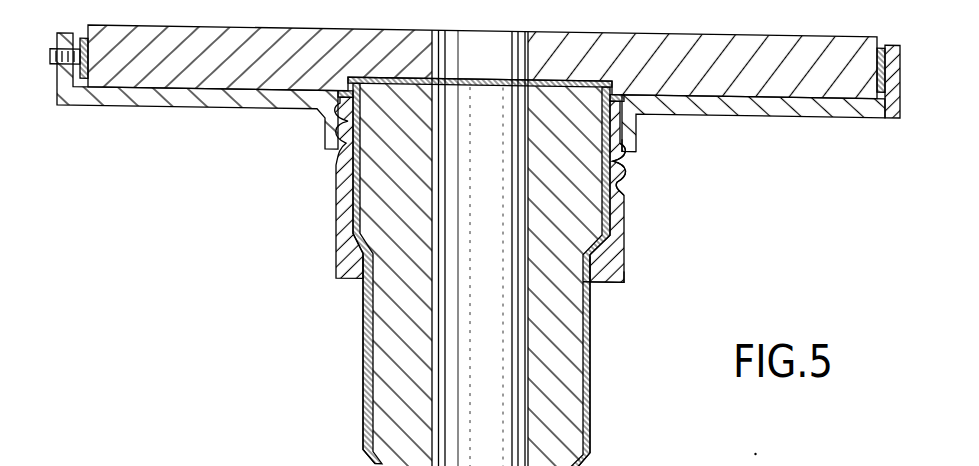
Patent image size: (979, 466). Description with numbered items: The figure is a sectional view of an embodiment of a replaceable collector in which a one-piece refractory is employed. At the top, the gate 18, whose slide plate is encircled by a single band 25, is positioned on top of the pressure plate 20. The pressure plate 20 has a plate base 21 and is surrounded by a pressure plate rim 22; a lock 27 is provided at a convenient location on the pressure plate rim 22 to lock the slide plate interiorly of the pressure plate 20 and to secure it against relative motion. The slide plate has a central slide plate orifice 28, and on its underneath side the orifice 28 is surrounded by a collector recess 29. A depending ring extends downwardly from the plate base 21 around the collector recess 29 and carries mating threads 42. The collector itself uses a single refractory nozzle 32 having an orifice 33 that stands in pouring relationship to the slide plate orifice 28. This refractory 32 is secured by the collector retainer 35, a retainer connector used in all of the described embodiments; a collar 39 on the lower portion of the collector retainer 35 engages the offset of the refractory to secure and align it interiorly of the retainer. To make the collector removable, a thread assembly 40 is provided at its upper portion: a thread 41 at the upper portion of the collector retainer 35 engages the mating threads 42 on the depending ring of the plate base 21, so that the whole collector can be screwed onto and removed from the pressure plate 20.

The gate 18 is at (638, 32).
The pressure plate 20 is at (907, 42).
The plate base 21 is at (782, 118).
The pressure plate rim 22 is at (902, 86).
The band 25 is at (82, 33).
The lock 27 is at (50, 56).
The slide plate orifice 28 is at (490, 61).
The collector recess 29 is at (547, 77).
The collector refractory 32 is at (577, 347).
The orifice 33 is at (486, 255).
The collector retainer 35 is at (622, 237).
The collar 39 is at (622, 283).
The thread assembly 40 is at (624, 158).
The thread 41 is at (623, 175).
The mating threads 42 is at (634, 138).